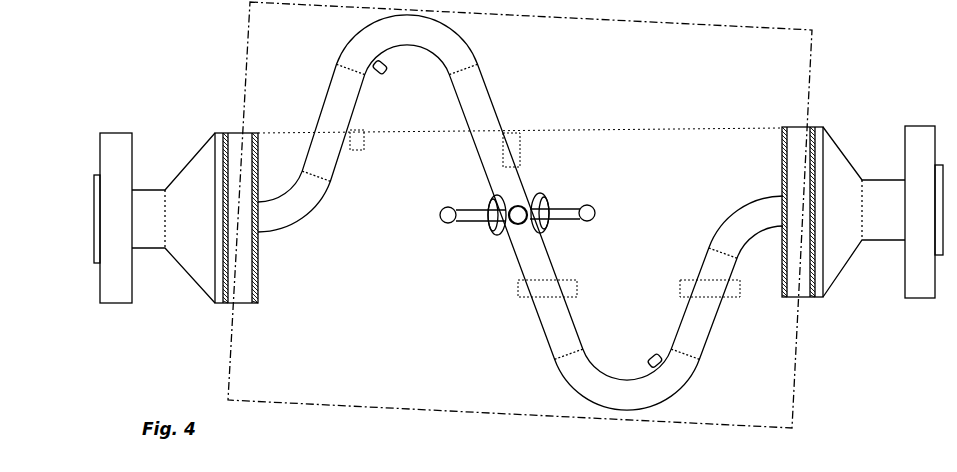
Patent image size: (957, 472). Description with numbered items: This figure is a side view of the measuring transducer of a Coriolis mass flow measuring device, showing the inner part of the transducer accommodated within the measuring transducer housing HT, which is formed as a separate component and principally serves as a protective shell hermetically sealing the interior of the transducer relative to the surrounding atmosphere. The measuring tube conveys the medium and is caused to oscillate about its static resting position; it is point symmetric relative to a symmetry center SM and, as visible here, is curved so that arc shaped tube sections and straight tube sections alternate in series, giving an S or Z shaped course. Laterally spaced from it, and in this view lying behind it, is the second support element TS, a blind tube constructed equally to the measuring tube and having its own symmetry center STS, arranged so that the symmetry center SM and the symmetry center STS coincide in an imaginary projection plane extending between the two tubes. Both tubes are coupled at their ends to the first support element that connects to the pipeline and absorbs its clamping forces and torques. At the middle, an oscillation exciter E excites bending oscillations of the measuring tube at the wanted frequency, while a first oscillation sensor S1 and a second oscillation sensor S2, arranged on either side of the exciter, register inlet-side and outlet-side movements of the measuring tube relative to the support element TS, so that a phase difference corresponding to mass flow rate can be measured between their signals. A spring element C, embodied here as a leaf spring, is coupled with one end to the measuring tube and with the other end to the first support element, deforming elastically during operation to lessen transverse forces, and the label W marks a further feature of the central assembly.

The measuring transducer housing HT is at (245, 360).
The second support element TS is at (635, 405).
The first oscillation sensor S1 is at (651, 338).
The second oscillation sensor S2 is at (385, 91).
The spring element C is at (478, 205).
The oscillation exciter E is at (539, 183).
The shaft W is at (525, 220).
The symmetry center of support element STS is at (489, 288).
The symmetry center of measuring tube SM is at (511, 237).